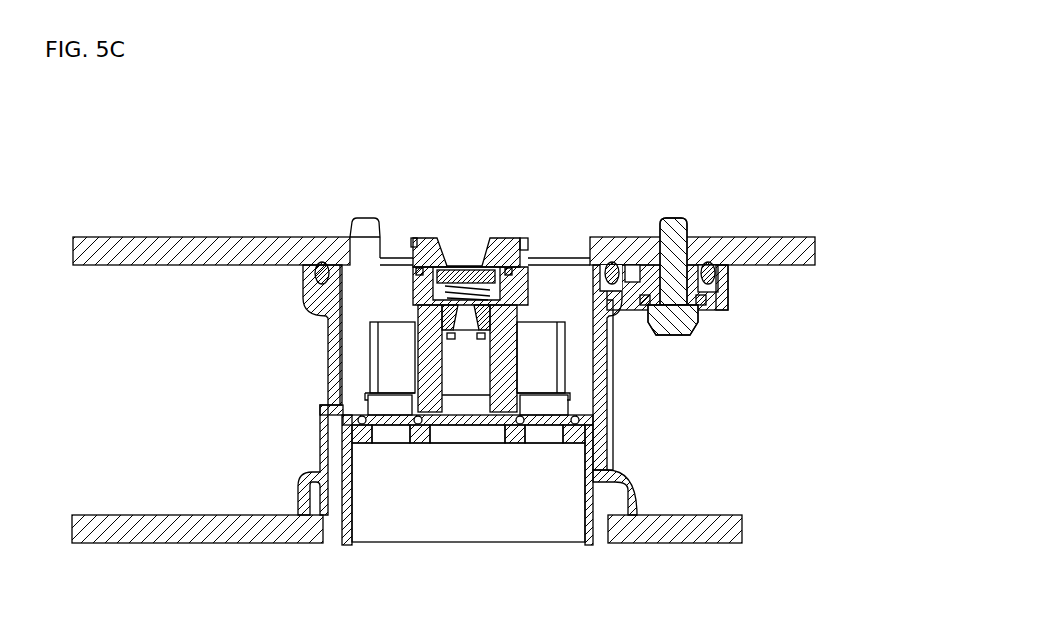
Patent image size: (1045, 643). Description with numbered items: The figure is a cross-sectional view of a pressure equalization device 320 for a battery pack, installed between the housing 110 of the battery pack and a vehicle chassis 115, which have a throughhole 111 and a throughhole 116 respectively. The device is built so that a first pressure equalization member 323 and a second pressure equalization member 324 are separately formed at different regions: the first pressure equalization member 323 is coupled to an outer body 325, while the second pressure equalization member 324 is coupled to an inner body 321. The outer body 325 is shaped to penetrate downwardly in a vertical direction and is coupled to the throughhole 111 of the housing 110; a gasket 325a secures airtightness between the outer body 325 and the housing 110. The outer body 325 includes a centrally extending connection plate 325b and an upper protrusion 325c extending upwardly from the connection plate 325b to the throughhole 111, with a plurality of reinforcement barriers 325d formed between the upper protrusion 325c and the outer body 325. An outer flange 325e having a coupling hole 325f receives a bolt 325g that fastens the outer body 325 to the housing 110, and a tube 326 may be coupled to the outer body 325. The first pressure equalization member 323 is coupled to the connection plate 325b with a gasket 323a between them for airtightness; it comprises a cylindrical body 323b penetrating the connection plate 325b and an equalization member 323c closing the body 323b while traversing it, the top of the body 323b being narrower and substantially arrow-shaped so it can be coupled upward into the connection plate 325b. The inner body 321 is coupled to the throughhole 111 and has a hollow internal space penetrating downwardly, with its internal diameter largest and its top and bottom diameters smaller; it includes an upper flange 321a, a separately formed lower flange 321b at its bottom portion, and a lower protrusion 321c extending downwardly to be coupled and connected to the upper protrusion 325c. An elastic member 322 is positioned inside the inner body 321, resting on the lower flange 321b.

The housing 110 is at (813, 244).
The throughhole 111 is at (572, 255).
The vehicle chassis 115 is at (160, 536).
The throughhole 116 is at (326, 528).
The pressure equalization device 320 is at (371, 226).
The inner body 321 is at (512, 245).
The upper flange 321a is at (418, 245).
The lower flange 321b is at (413, 303).
The lower protrusion 321c is at (428, 341).
The elastic member 322 is at (470, 285).
The first pressure equalization member 323 is at (540, 447).
The gasket 323a is at (500, 426).
The body 323b is at (514, 441).
The equalization member 323c is at (594, 518).
The second pressure equalization member 324 is at (453, 290).
The outer body 325 is at (600, 345).
The fastening bolt 325a is at (614, 262).
The connection plate 325b is at (590, 405).
The upper protrusion 325c is at (510, 367).
The reinforcement barriers 325d is at (388, 383).
The outer flange 325e is at (722, 290).
The coupling hole 325f is at (700, 318).
The bolt 325g is at (698, 334).
The tube 326 is at (630, 477).